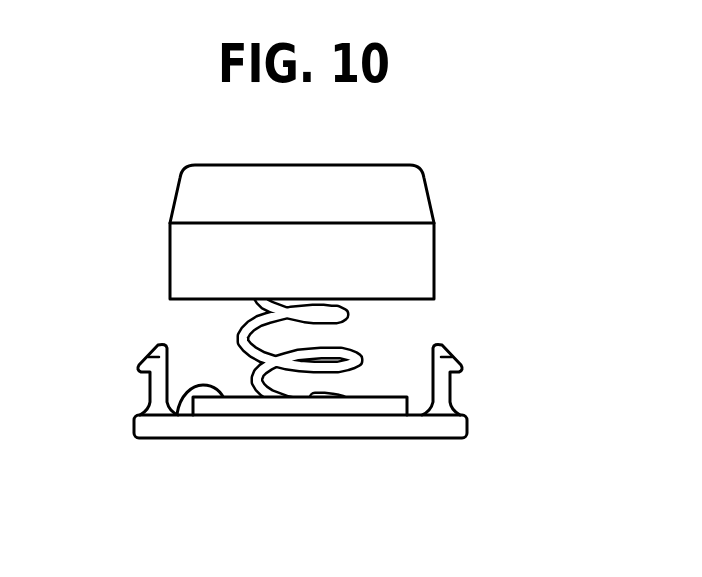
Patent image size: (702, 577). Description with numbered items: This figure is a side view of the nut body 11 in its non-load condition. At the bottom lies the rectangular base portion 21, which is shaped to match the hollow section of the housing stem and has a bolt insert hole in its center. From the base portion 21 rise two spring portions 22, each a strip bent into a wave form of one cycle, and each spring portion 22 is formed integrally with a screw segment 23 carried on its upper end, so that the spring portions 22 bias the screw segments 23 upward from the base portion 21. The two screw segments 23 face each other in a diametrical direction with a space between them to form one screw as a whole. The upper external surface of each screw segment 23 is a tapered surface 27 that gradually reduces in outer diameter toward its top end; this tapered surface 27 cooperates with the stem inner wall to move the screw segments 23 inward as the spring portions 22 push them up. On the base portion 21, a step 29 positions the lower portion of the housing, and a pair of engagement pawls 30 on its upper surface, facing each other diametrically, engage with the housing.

The nut body 11 is at (430, 138).
The base portion 21 is at (388, 427).
The spring portion 22 is at (274, 367).
The screw segment 23 is at (413, 263).
The tapered surface 27 is at (173, 190).
The step 29 is at (182, 400).
The engagement pawl 30 is at (150, 357).